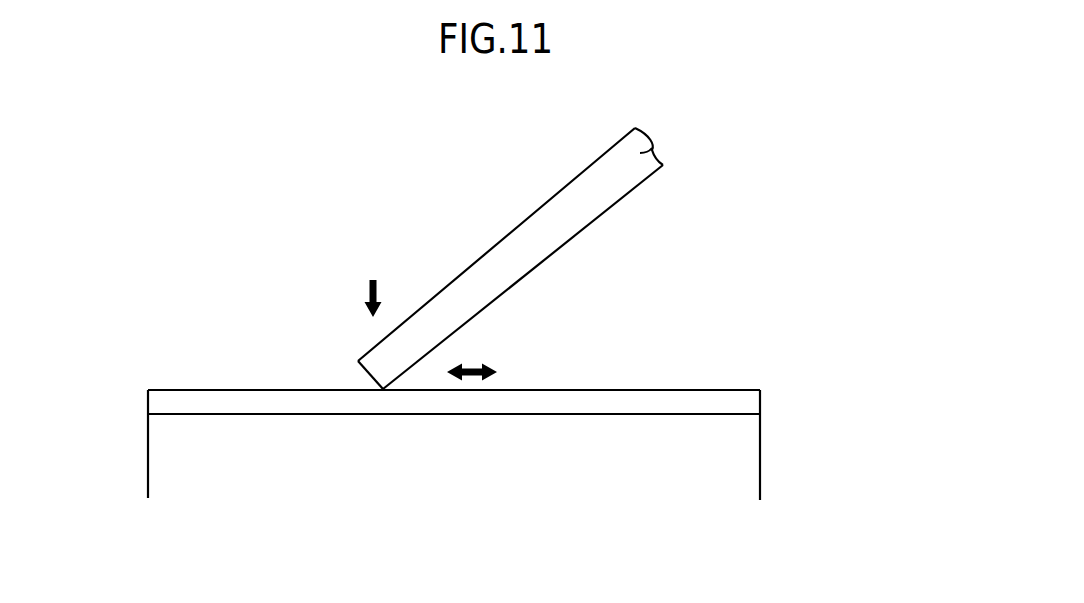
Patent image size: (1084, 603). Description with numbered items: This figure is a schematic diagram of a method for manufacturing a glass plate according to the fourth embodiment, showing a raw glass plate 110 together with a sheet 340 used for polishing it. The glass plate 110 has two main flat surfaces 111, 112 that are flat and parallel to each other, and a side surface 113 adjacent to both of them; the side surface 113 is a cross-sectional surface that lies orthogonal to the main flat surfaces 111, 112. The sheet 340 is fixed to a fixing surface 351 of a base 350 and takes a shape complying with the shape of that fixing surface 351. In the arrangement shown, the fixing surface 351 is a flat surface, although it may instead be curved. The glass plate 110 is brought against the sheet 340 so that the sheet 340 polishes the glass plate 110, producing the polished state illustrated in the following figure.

The glass plate 110 is at (508, 247).
The main flat surface 111 is at (487, 258).
The main flat surface 112 is at (515, 280).
The side surface 113 is at (367, 379).
The sheet 340 is at (159, 401).
The base 350 is at (159, 456).
The fixing surface 351 is at (742, 414).